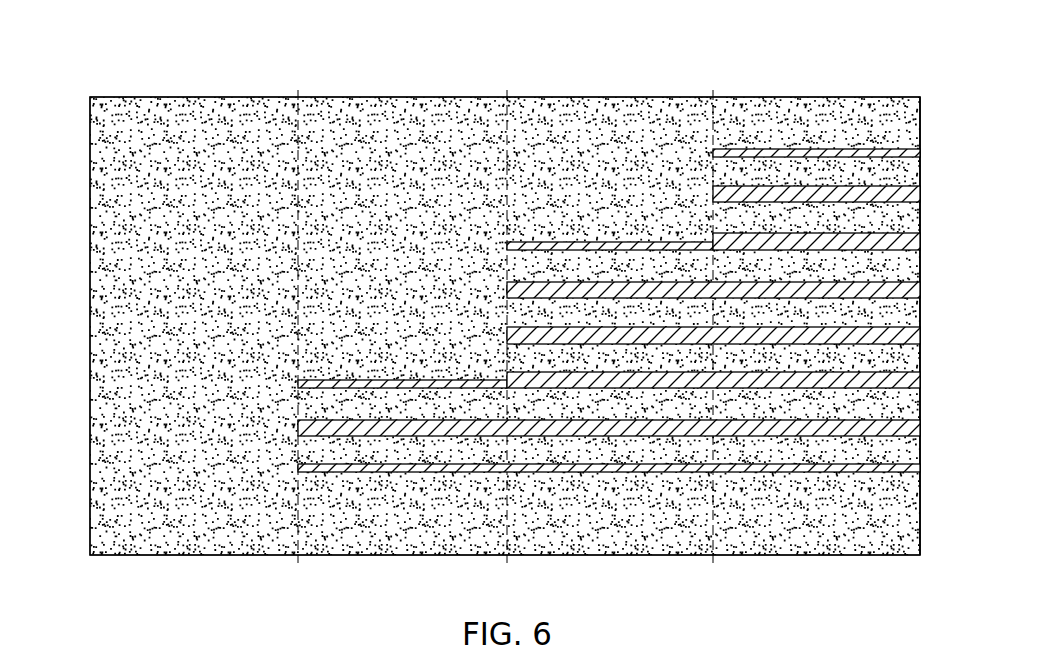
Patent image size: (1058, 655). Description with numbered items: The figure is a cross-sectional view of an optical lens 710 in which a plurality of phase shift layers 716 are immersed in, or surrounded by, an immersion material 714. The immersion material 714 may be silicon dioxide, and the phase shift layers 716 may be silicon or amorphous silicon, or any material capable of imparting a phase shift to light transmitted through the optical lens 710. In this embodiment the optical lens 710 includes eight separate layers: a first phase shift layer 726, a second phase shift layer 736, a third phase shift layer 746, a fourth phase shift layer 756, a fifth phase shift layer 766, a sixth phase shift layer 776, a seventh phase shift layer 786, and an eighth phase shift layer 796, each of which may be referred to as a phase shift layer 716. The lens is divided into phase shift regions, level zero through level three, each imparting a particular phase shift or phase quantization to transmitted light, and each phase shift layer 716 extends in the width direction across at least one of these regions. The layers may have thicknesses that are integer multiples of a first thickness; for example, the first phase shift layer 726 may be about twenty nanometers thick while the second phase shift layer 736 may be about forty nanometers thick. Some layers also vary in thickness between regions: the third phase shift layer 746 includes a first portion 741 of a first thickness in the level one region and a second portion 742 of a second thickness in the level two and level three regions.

The optical lens 710 is at (501, 288).
The immersion material 714 is at (105, 237).
The phase shift layers 716 is at (919, 290).
The first phase shift layer 726 is at (298, 468).
The second phase shift layer 736 is at (298, 422).
The first portion 741 is at (396, 380).
The second portion 742 is at (630, 372).
The third phase shift layer 746 is at (482, 223).
The fourth phase shift layer 756 is at (503, 333).
The fifth phase shift layer 766 is at (503, 287).
The sixth phase shift layer 776 is at (503, 245).
The seventh phase shift layer 786 is at (713, 195).
The eighth phase shift layer 796 is at (713, 153).